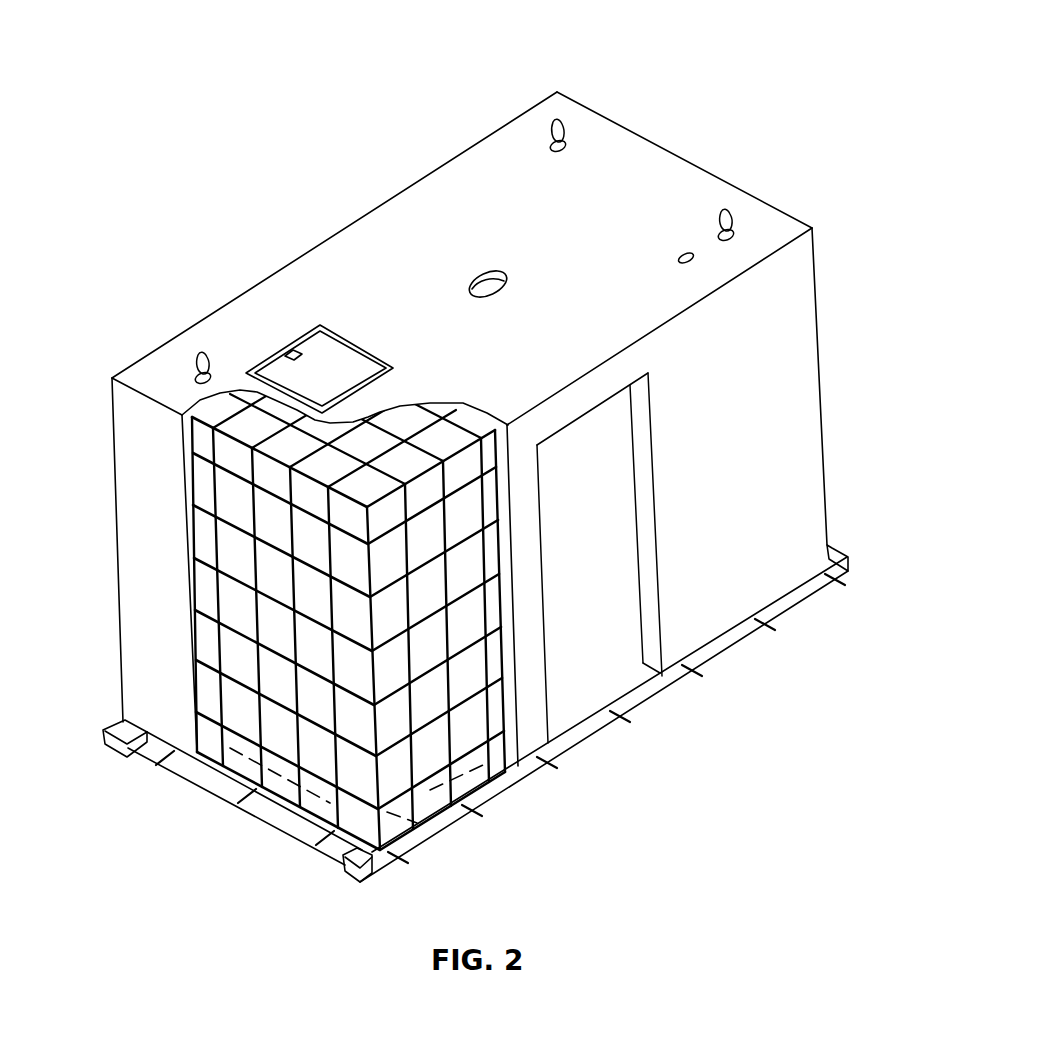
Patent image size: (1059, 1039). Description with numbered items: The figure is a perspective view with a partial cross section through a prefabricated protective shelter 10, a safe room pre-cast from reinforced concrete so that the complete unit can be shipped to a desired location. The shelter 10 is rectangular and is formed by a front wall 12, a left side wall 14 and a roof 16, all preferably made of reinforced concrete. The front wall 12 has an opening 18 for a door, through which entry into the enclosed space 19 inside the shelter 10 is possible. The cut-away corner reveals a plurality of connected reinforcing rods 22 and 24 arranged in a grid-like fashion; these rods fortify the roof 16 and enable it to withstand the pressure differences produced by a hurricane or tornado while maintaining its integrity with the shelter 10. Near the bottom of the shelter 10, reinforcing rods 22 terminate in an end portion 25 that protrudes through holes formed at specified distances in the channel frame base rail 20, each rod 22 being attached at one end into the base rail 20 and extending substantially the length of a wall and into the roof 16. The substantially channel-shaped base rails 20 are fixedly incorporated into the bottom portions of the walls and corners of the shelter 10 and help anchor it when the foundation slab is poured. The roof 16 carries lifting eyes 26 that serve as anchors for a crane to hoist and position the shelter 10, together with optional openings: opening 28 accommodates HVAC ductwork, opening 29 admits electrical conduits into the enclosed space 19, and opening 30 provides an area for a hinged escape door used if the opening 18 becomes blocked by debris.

The prefabricated protective shelter 10 is at (712, 72).
The front wall 12 is at (785, 320).
The left side wall 14 is at (137, 452).
The roof 16 is at (645, 188).
The opening 18 is at (650, 647).
The enclosed space 19 is at (592, 612).
The channel frame base rail 20 is at (372, 867).
The reinforcing rods 22 is at (337, 715).
The reinforcing rods 24 is at (250, 482).
The end portion 25 is at (457, 800).
The lifting eye 26 is at (562, 118).
The opening 28 is at (488, 275).
The opening 29 is at (695, 255).
The opening 30 is at (313, 344).